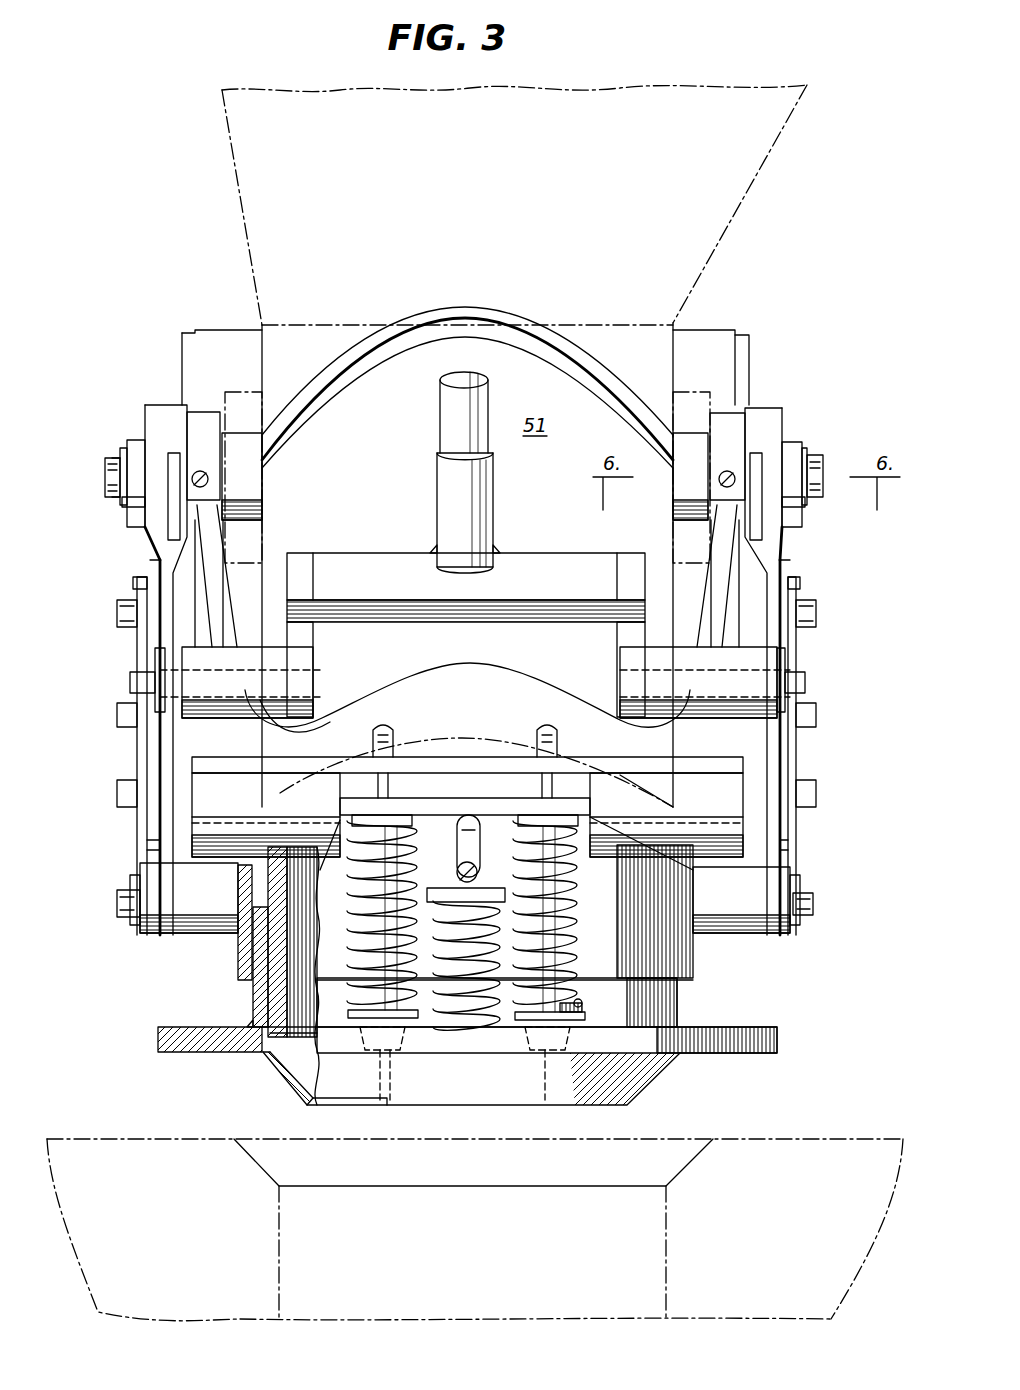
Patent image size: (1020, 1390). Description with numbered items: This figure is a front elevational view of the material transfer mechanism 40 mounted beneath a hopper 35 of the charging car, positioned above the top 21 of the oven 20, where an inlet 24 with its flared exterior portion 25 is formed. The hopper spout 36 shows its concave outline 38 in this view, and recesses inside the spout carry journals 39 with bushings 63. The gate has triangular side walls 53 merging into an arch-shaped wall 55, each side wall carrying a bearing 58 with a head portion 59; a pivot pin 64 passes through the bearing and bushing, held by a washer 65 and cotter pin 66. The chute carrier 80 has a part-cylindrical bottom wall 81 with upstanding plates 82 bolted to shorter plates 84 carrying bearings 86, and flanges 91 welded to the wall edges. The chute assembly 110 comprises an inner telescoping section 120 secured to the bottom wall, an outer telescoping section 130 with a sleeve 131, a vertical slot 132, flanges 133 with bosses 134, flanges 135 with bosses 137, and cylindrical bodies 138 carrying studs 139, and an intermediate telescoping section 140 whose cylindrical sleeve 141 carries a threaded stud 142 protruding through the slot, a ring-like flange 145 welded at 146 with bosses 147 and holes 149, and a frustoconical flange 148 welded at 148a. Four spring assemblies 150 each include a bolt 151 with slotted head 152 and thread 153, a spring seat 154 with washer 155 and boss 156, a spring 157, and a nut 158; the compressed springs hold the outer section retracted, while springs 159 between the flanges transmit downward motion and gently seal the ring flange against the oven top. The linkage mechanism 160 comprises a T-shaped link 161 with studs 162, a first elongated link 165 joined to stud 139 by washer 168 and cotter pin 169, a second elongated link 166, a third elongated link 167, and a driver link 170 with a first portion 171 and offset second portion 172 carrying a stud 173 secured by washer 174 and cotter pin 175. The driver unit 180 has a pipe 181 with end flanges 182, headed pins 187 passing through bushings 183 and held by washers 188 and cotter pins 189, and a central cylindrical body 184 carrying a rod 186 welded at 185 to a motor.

The oven 20 is at (850, 1112).
The top 21 is at (802, 1138).
The inlet 24 is at (695, 1130).
The flared exterior portion 25 is at (685, 1163).
The hopper 35 is at (676, 100).
The spout 36 is at (625, 345).
The concave outline 38 is at (440, 740).
The journal 39 is at (250, 415).
The material transfer mechanism 40 is at (862, 875).
The side wall 53 is at (255, 580).
The arch-shaped wall 55 is at (740, 412).
The bearing 58 is at (210, 412).
The head portion 59 is at (200, 435).
The bushing 63 is at (250, 487).
The pivot pin 64 is at (115, 458).
The washer 65 is at (123, 448).
The cotter pin 66 is at (105, 470).
The chute carrier 80 is at (782, 405).
The bottom wall 81 is at (693, 804).
The upstanding plate 82 is at (190, 743).
The plate 84 is at (173, 508).
The bearing 86 is at (165, 415).
The flange 91 is at (580, 770).
The chute assembly 110 is at (126, 1071).
The inner telescoping section 120 is at (245, 884).
The outer telescoping section 130 is at (700, 975).
The sleeve 131 is at (693, 952).
The slot 132 is at (480, 838).
The flange 133 is at (590, 808).
The boss 134 is at (335, 820).
The flange 135 is at (445, 888).
The boss 137 is at (472, 885).
The cylindrical body 138 is at (195, 932).
The stud 139 is at (128, 920).
The intermediate telescoping section 140 is at (268, 1078).
The cylindrical sleeve 141 is at (258, 995).
The threaded stud 142 is at (460, 857).
The ring-like flange 145 is at (170, 1040).
The weld 146 is at (250, 1025).
The boss 147 is at (490, 1030).
The flange 148 is at (300, 1092).
The weld 148a is at (258, 1056).
The hole 149 is at (365, 1052).
The spring assembly 150 is at (583, 1057).
The bolt 151 is at (355, 875).
The slotted head 152 is at (385, 1052).
The thread 153 is at (540, 792).
The spring seat 154 is at (370, 1020).
The washer 155 is at (586, 1010).
The boss 156 is at (578, 998).
The spring 157 is at (352, 912).
The nut 158 is at (370, 745).
The spring 159 is at (475, 1028).
The linkage mechanism 160 is at (92, 790).
The T-shaped link 161 is at (172, 768).
The stud 162 is at (117, 716).
The first elongated link 165 is at (150, 842).
The second elongated link 166 is at (147, 710).
The third elongated link 167 is at (137, 838).
The washer 168 is at (133, 882).
The cotter pin 169 is at (120, 908).
The driver link 170 is at (130, 445).
The first portion 171 is at (125, 503).
The second portion 172 is at (158, 562).
The stud 173 is at (127, 622).
The washer 174 is at (133, 583).
The cotter pin 175 is at (117, 611).
The driver unit 180 is at (535, 505).
The pipe 181 is at (352, 563).
The flange 182 is at (312, 638).
The bushing 183 is at (275, 662).
The cylindrical body 184 is at (493, 537).
The weld 185 is at (435, 548).
The rod 186 is at (490, 412).
The headed pin 187 is at (320, 690).
The washer 188 is at (155, 660).
The cotter pin 189 is at (130, 682).